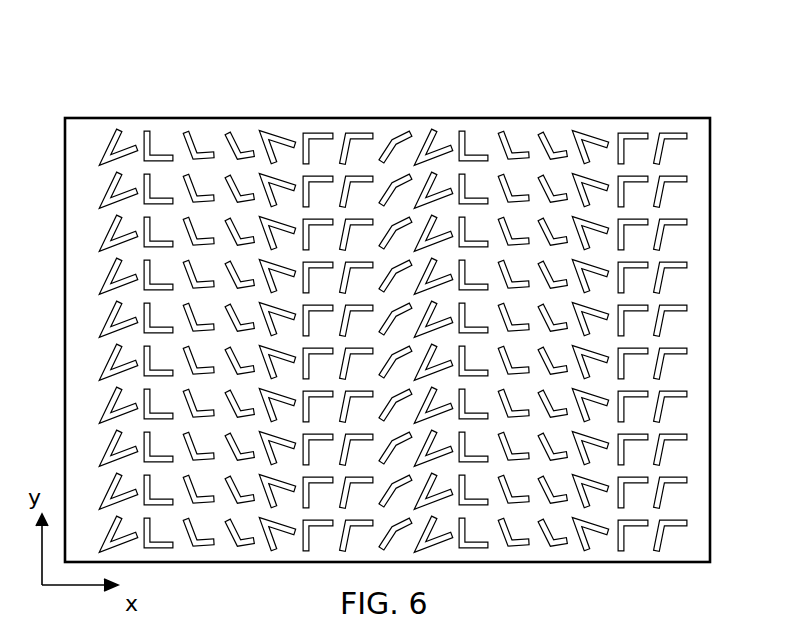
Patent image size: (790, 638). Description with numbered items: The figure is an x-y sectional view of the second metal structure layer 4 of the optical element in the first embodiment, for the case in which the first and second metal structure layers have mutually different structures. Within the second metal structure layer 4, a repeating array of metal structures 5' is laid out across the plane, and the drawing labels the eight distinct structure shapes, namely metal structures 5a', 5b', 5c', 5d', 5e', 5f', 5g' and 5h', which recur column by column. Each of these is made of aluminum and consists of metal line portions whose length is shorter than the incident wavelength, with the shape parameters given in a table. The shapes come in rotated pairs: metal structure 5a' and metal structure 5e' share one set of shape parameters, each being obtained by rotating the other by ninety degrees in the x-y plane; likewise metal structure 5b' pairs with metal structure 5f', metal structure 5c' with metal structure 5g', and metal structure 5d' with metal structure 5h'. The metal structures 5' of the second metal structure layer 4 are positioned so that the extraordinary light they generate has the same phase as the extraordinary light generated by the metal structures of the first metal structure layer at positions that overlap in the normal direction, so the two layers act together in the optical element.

The second metal structure layer 4 is at (708, 183).
The metal structures 5' is at (386, 282).
The metal structure 5a' is at (274, 304).
The metal structure 5b' is at (314, 311).
The metal structure 5c' is at (354, 303).
The metal structure 5d' is at (389, 312).
The metal structure 5e' is at (431, 307).
The metal structure 5f' is at (472, 315).
The metal structure 5g' is at (513, 305).
The metal structure 5h' is at (403, 314).